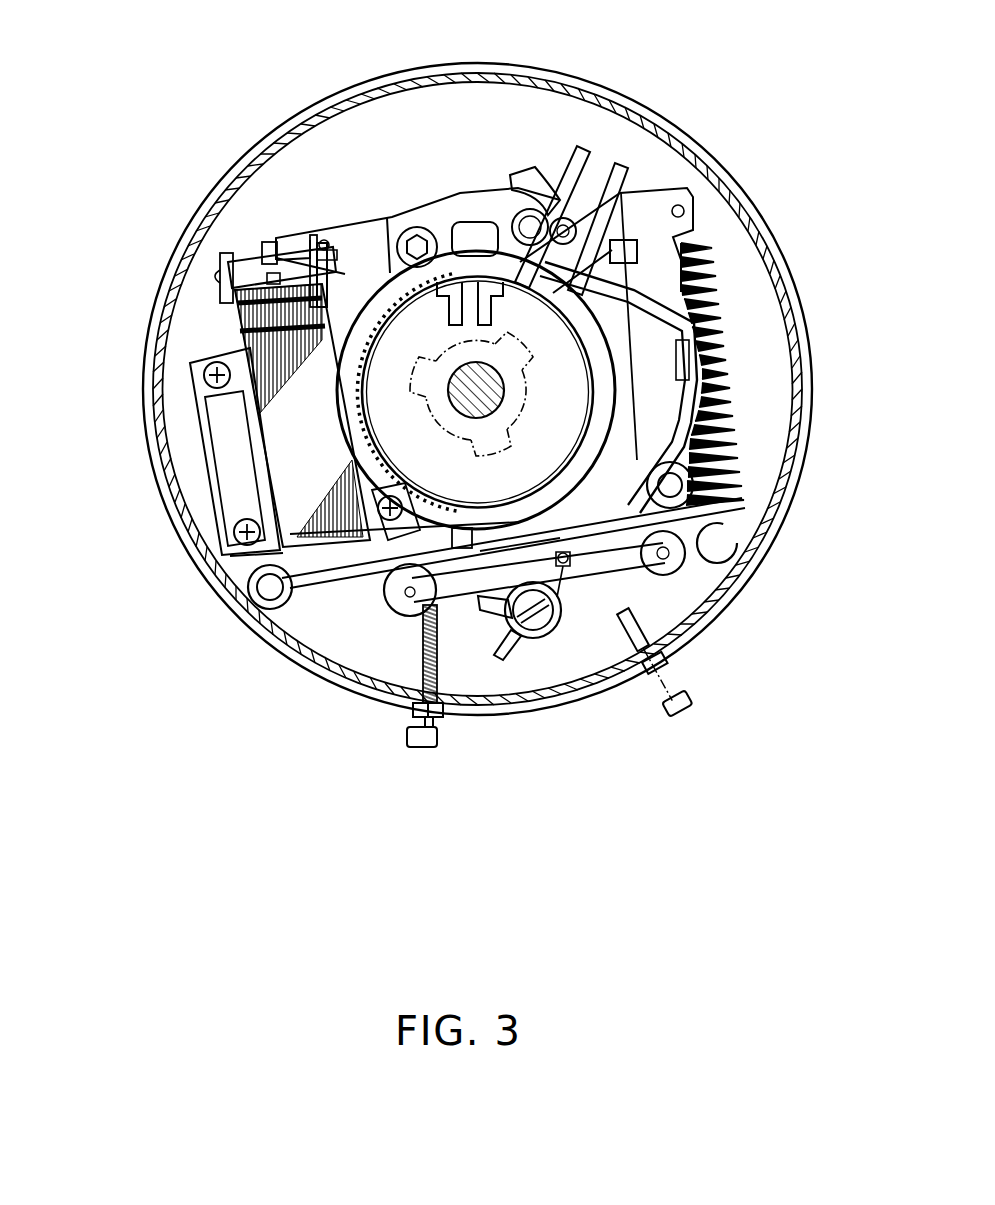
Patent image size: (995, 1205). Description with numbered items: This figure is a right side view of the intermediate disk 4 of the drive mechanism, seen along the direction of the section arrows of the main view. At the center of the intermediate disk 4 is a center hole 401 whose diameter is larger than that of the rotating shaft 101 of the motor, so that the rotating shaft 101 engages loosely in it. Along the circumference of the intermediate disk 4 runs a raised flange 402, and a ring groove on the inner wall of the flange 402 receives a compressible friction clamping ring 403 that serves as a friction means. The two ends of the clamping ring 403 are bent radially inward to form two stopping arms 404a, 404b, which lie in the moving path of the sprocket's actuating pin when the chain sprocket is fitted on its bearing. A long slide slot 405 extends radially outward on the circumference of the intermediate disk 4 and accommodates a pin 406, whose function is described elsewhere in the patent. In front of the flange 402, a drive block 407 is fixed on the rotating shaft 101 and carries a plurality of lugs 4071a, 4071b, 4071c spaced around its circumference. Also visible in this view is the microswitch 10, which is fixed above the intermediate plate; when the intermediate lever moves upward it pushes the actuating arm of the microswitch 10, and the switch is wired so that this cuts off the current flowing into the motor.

The intermediate disk 4 is at (472, 382).
The microswitch 10 is at (557, 555).
The rotating shaft 101 is at (273, 240).
The center hole 401 is at (455, 400).
The raised flange 402 is at (395, 276).
The friction clamping ring 403 is at (607, 247).
The stopping arm 404a is at (440, 247).
The stopping arm 404b is at (490, 248).
The long slide slot 405 is at (612, 197).
The pin 406 is at (548, 290).
The drive block 407 is at (593, 396).
The lug 4071a is at (485, 455).
The lug 4071b is at (520, 350).
The lug 4071c is at (425, 372).